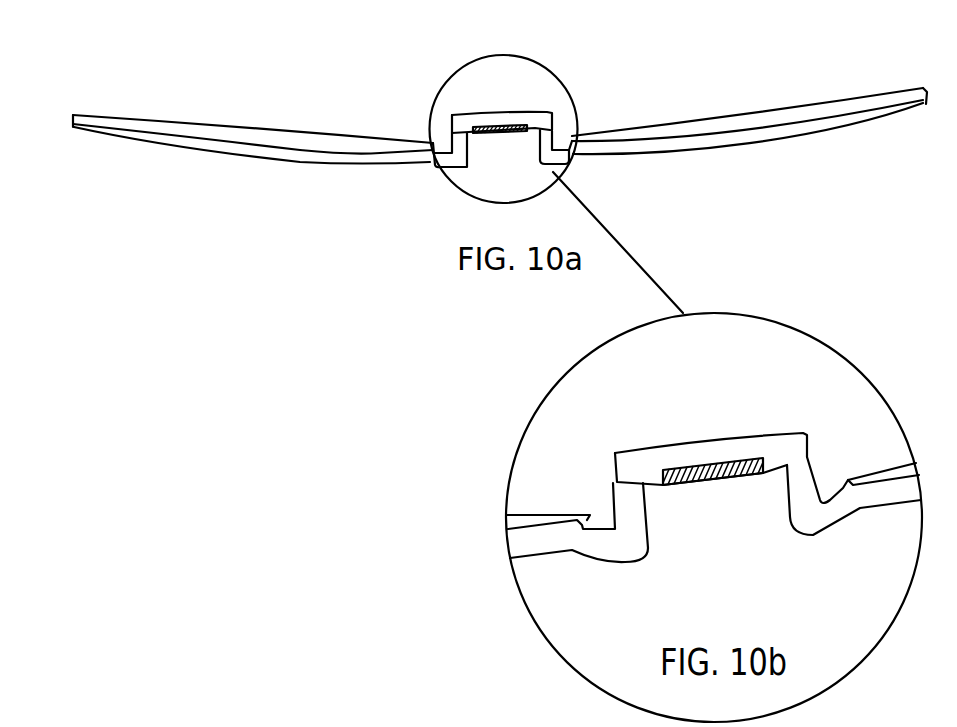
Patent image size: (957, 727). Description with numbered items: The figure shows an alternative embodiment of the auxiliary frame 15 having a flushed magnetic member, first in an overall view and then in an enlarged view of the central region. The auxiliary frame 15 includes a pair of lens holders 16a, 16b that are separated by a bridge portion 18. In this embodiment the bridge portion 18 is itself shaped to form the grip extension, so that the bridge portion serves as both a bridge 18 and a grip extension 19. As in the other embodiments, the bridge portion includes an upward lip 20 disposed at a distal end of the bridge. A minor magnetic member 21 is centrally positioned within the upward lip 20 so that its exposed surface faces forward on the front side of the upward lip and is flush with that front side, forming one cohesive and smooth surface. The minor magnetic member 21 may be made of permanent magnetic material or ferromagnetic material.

In FIG. 10A, the auxiliary frame 15 is at (840, 67).
In FIG. 10A, the lens holder 16a is at (198, 148).
In FIG. 10B, the lens holder 16a is at (577, 522).
In FIG. 10A, the lens holder 16b is at (812, 128).
In FIG. 10B, the lens holder 16b is at (854, 496).
In FIG. 10A, the bridge portion 18 is at (543, 73).
In FIG. 10A, the grip extension 19 is at (510, 103).
In FIG. 10B, the grip extension 19 is at (595, 475).
In FIG. 10A, the upward lip 20 is at (542, 125).
In FIG. 10B, the upward lip 20 is at (790, 447).
In FIG. 10A, the minor magnetic member 21 is at (498, 135).
In FIG. 10B, the minor magnetic member 21 is at (708, 465).